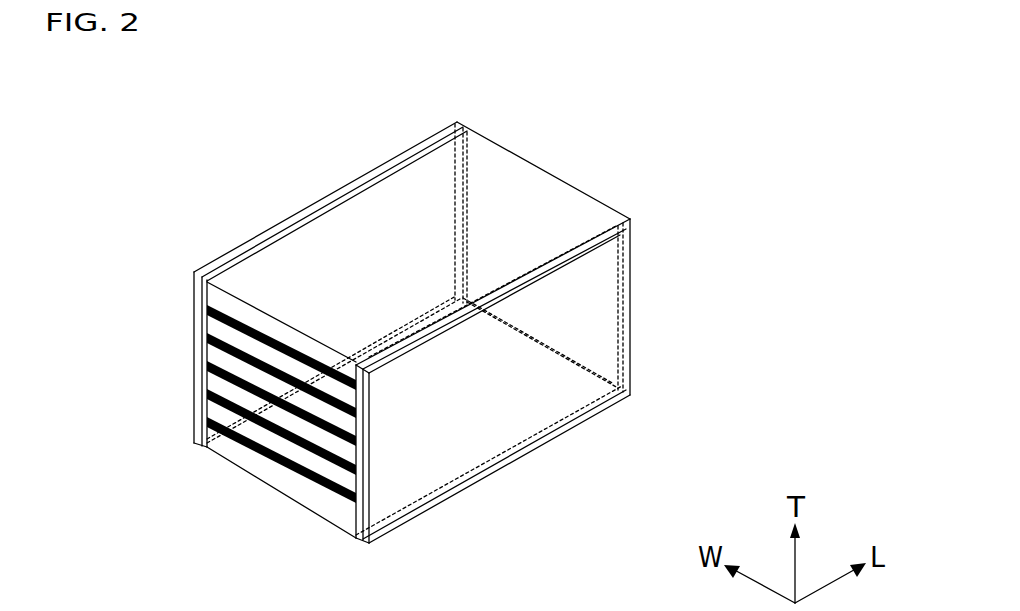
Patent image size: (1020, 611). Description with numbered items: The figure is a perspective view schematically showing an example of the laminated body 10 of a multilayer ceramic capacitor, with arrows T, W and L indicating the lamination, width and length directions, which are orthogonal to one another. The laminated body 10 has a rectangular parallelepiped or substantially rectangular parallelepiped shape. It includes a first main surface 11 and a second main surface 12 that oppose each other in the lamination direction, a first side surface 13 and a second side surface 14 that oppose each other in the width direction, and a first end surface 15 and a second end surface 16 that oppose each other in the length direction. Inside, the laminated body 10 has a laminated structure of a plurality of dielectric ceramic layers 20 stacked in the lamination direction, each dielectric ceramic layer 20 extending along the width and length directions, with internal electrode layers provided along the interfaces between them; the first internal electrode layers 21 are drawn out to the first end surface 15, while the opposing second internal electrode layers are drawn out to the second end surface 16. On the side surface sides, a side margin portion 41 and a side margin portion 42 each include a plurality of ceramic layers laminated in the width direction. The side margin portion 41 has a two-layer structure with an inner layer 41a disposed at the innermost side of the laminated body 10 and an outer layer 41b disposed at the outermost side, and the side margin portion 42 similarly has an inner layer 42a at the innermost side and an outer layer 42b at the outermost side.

The laminated body 10 is at (212, 121).
The first main surface 11 is at (442, 230).
The second main surface 12 is at (462, 493).
The first side surface 13 is at (363, 217).
The second side surface 14 is at (507, 417).
The first end surface 15 is at (272, 445).
The second end surface 16 is at (532, 220).
The dielectric ceramic layer 20 is at (242, 378).
The first internal electrode layer 21 is at (215, 394).
The side margin portion 41 is at (112, 170).
The inner layer 41a is at (230, 257).
The outer layer 41b is at (272, 227).
The side margin portion 42 is at (745, 167).
The inner layer 42a is at (605, 222).
The outer layer 42b is at (597, 238).